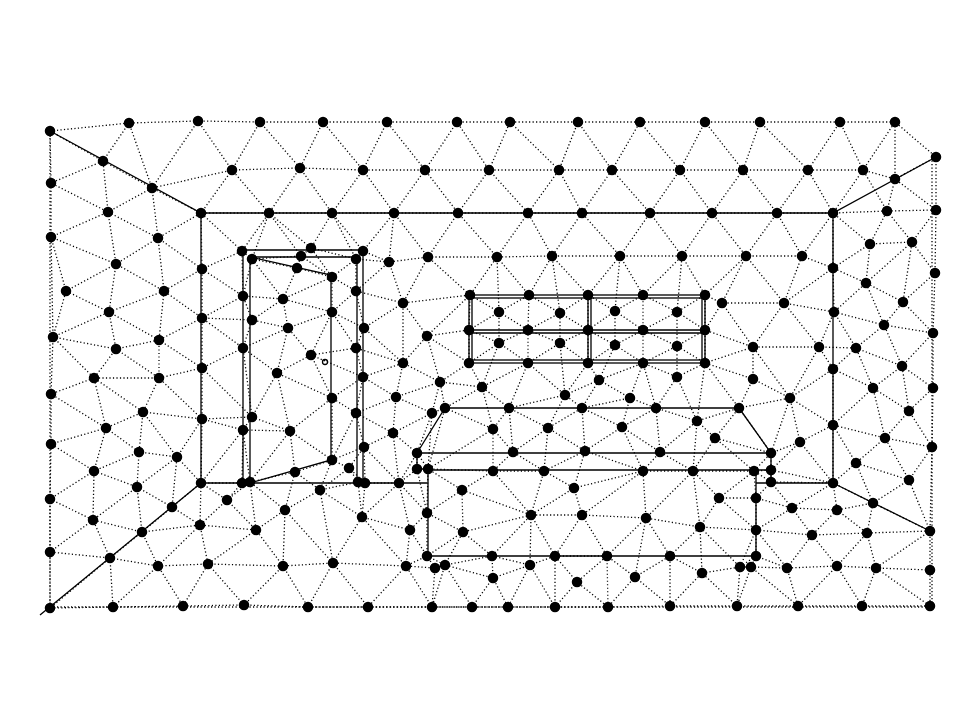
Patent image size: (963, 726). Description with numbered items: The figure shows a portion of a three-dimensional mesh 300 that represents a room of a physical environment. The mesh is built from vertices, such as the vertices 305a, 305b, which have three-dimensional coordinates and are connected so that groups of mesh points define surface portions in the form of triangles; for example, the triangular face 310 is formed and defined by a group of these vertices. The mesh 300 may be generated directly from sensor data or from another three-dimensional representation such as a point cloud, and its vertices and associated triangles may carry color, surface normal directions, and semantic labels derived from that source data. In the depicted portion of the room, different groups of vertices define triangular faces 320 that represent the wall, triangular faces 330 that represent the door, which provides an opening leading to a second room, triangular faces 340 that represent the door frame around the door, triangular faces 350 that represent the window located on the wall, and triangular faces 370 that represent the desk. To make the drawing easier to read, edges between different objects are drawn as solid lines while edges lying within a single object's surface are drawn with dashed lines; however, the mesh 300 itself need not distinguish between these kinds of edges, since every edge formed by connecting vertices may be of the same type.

The 3D mesh 300 is at (88, 45).
The vertex 305a is at (152, 187).
The vertex 305b is at (198, 120).
The triangular face 310 is at (163, 130).
The triangular faces representing wall 320 is at (727, 240).
The triangular faces representing door 330 is at (297, 267).
The triangular faces representing door frame 340 is at (348, 251).
The triangular faces representing window 350 is at (513, 294).
The triangular faces representing desk 370 is at (658, 549).